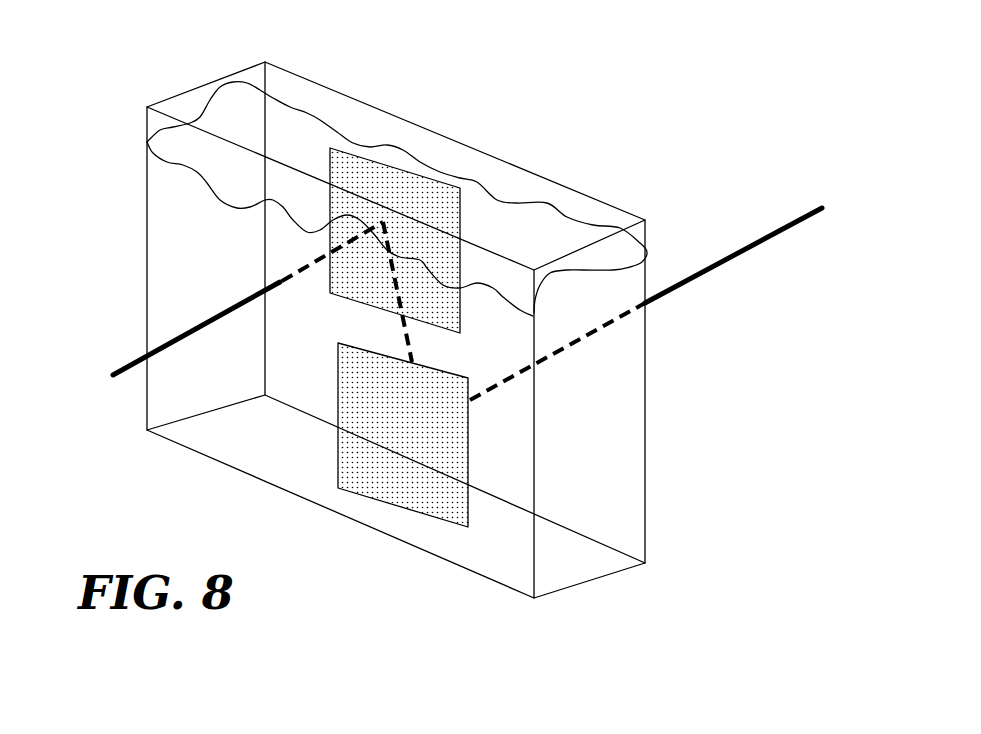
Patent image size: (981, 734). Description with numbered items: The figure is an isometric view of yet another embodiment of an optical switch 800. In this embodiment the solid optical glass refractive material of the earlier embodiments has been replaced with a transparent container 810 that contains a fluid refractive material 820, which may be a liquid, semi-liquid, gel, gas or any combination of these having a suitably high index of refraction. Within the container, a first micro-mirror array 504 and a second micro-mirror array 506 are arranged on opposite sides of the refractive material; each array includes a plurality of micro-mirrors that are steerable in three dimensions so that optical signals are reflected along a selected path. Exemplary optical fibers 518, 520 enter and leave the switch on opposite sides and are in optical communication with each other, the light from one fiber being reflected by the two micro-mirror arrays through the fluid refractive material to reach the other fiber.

The optical switch 800 is at (517, 84).
The transparent container 810 is at (645, 498).
The fluid refractive material 820 is at (172, 265).
The first micro-mirror array 504 is at (404, 168).
The second micro-mirror array 506 is at (365, 496).
The optical fiber 518 is at (135, 355).
The optical fiber 520 is at (717, 268).